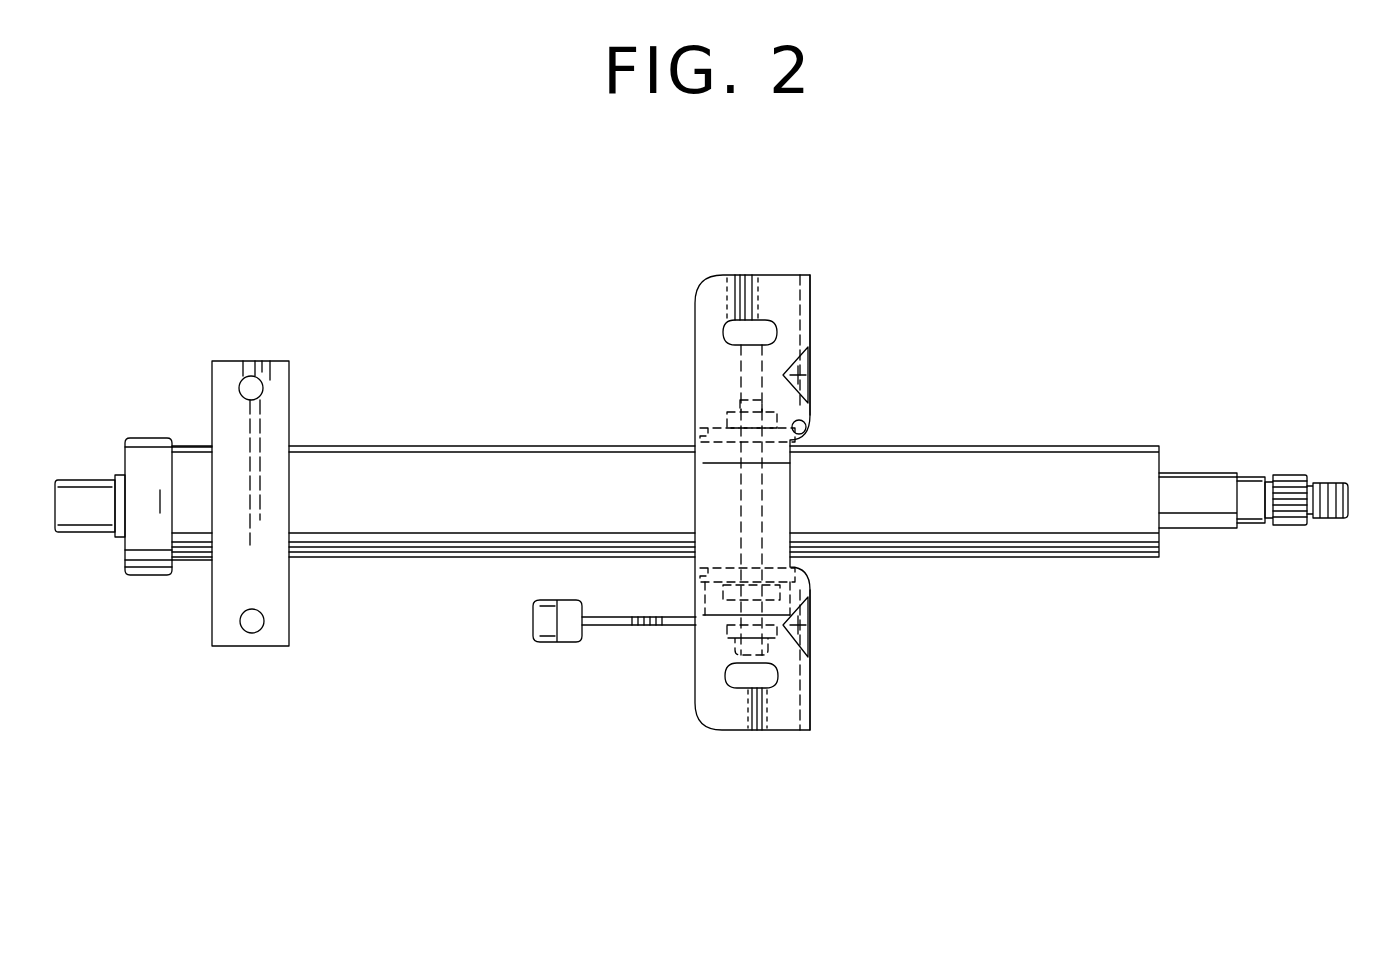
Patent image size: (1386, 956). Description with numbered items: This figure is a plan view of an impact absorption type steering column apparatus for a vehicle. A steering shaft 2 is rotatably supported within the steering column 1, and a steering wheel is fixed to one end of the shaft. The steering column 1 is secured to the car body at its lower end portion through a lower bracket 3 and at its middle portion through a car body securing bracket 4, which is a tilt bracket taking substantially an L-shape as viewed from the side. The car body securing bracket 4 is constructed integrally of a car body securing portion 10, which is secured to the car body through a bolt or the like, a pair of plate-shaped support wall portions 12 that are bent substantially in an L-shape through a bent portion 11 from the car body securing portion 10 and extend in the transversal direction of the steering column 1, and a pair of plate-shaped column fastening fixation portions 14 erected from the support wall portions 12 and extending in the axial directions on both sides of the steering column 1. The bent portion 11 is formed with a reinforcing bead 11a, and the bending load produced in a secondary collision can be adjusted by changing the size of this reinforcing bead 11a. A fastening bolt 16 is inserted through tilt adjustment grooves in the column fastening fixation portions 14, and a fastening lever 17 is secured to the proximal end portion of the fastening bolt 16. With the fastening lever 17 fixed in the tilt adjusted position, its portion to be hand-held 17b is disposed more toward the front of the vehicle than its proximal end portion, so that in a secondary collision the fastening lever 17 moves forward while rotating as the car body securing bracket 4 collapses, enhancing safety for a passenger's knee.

The steering column 1 is at (1040, 443).
The steering shaft 2 is at (1206, 472).
The lower bracket 3 is at (290, 412).
The car body securing bracket 4 is at (763, 504).
The car body securing portion 10 is at (697, 318).
The bent portion 11 is at (812, 313).
The reinforcing bead 11a is at (812, 380).
The support wall portion 12 is at (800, 307).
The column fastening fixation portion 14 is at (697, 572).
The fastening bolt 16 is at (762, 507).
The fastening lever 17 is at (636, 643).
The portion to be hand-held 17b is at (557, 643).